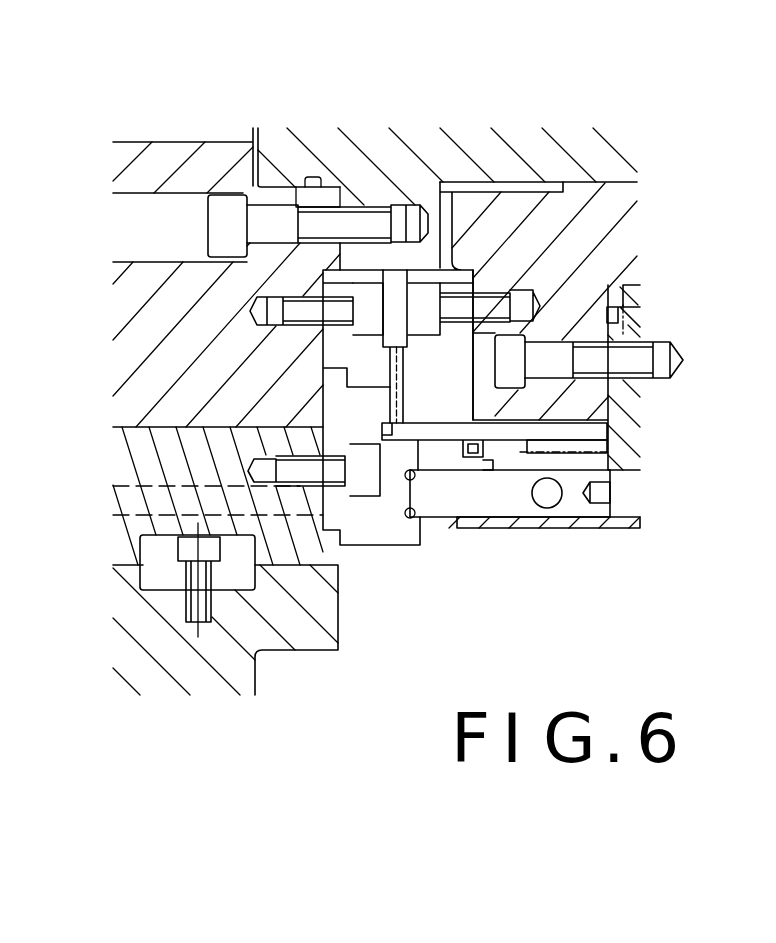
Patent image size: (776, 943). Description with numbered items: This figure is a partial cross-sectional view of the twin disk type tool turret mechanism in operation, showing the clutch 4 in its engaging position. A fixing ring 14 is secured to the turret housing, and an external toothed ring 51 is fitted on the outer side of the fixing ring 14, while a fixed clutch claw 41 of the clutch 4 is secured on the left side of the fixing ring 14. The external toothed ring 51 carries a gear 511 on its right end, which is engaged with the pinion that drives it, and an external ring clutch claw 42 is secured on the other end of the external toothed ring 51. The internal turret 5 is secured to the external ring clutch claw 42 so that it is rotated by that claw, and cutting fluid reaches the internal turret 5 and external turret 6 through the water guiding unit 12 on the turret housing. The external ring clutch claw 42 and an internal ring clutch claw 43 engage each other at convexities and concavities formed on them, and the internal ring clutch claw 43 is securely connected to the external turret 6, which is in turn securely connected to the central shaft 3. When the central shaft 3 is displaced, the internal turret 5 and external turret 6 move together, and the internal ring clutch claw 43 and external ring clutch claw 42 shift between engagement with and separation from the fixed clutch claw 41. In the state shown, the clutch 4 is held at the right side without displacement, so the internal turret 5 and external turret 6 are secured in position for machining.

The central shaft 3 is at (617, 148).
The clutch 4 is at (393, 293).
The internal turret 5 is at (305, 635).
The external turret 6 is at (215, 150).
The water guiding unit 12 is at (440, 542).
The fixing ring 14 is at (620, 232).
The fixed clutch claw 41 is at (453, 343).
The external ring clutch claw 42 is at (355, 427).
The internal ring clutch claw 43 is at (342, 347).
The external toothed ring 51 is at (512, 430).
The gear 511 is at (580, 450).